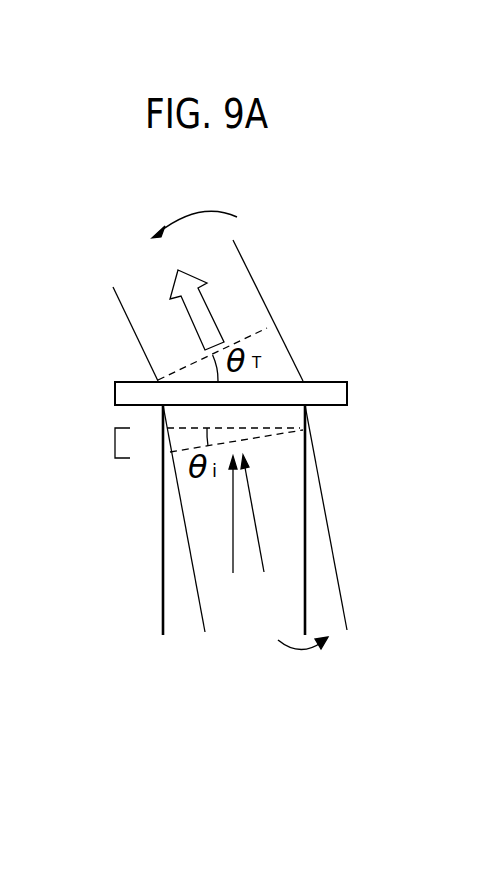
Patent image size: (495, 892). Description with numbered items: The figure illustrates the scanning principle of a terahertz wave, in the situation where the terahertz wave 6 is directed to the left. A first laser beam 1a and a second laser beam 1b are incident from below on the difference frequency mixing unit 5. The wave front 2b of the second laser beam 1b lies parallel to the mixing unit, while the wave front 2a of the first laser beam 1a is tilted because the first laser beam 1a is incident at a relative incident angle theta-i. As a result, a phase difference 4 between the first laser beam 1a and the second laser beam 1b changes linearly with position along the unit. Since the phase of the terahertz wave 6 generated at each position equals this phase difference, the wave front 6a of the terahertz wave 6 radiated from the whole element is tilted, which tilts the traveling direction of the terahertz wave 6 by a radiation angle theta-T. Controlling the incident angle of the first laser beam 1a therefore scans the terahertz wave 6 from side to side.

The first laser beam 1a is at (260, 543).
The second laser beam 1b is at (233, 528).
The wave front of the first laser beam 2a is at (252, 442).
The wave front of the second laser beam 2b is at (187, 430).
The phase difference 4 is at (113, 445).
The difference frequency mixing unit 5 is at (122, 390).
The terahertz wave 6 is at (205, 320).
The wave front of the terahertz wave 6a is at (243, 345).